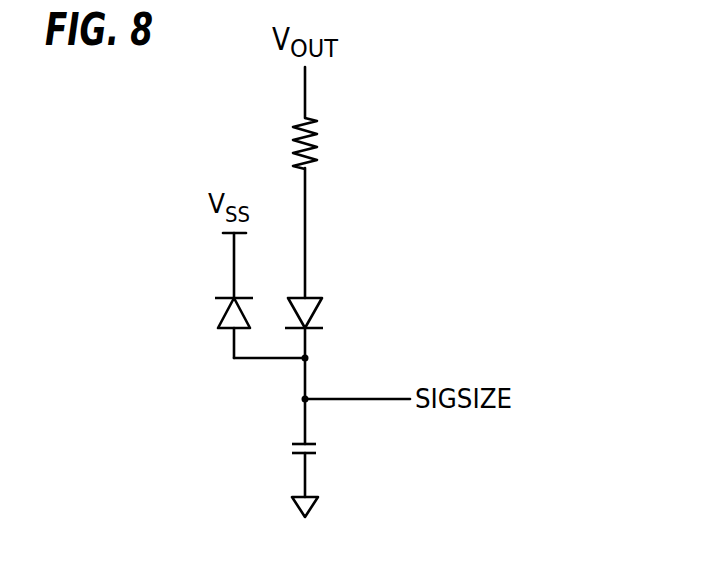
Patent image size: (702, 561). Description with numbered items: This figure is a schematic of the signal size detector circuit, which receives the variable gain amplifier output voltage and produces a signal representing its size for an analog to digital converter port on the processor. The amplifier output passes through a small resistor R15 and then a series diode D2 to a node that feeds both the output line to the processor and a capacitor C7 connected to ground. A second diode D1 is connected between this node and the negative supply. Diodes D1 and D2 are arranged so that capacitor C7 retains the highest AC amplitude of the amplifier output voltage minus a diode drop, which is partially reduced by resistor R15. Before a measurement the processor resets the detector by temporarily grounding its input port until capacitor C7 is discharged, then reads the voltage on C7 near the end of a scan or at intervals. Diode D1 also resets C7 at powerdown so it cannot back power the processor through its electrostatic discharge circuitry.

The small resistor R15 is at (328, 143).
The diode D1 is at (215, 311).
The diode D2 is at (321, 311).
The capacitor C7 is at (320, 447).